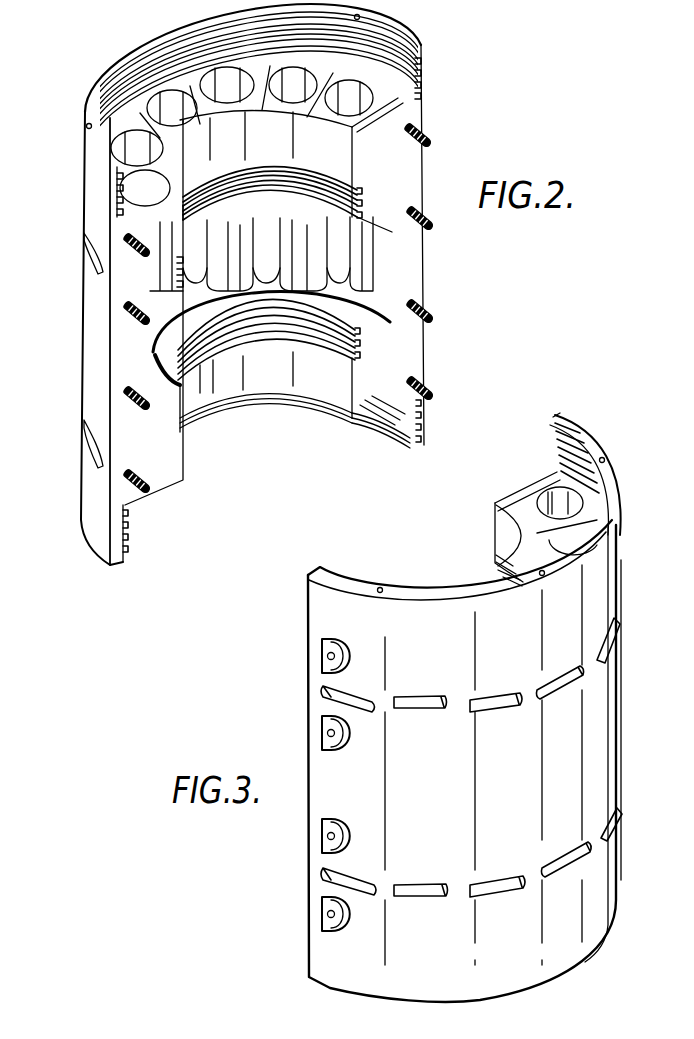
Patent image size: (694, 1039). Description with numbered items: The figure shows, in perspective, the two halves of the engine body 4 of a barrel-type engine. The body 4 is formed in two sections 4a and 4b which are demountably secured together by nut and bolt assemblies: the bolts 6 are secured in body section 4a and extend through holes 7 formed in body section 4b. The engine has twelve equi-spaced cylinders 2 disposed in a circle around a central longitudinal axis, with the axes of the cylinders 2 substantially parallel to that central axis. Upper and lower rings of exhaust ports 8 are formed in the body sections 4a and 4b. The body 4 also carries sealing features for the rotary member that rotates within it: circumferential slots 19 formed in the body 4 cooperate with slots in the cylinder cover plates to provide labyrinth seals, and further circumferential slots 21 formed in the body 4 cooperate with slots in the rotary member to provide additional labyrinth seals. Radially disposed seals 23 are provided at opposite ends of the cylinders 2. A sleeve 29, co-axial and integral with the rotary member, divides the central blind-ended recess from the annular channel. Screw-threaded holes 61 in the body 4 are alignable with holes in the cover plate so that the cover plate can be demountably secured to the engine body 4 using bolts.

In FIG. 2, the cylinders 2 is at (157, 99).
In FIG. 3, the cylinders 2 is at (547, 500).
In FIG. 2, the engine body 4 is at (262, 300).
In FIG. 3, the engine body 4 is at (434, 761).
In FIG. 2, the body section 4a is at (83, 374).
In FIG. 3, the body section 4b is at (415, 788).
In FIG. 2, the bolts 6 is at (147, 233).
In FIG. 3, the holes 7 is at (331, 733).
In FIG. 2, the exhaust ports 8 is at (97, 268).
In FIG. 3, the exhaust ports 8 is at (560, 697).
In FIG. 2, the circumferential slots 19 is at (395, 450).
In FIG. 2, the circumferential slots 21 is at (360, 193).
In FIG. 2, the radially disposed seals 23 is at (170, 98).
In FIG. 3, the radially disposed seals 23 is at (523, 492).
In FIG. 2, the sleeve 29 is at (120, 190).
In FIG. 2, the screw-threaded holes 61 is at (359, 17).
In FIG. 3, the screw-threaded holes 61 is at (604, 458).